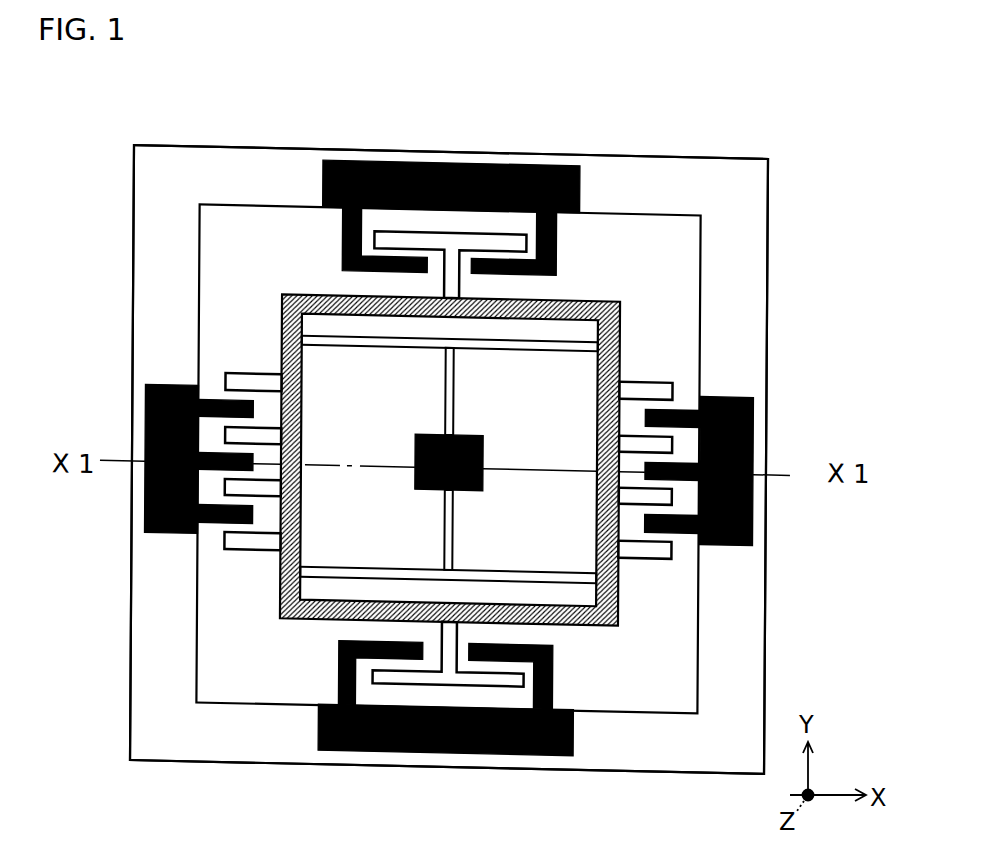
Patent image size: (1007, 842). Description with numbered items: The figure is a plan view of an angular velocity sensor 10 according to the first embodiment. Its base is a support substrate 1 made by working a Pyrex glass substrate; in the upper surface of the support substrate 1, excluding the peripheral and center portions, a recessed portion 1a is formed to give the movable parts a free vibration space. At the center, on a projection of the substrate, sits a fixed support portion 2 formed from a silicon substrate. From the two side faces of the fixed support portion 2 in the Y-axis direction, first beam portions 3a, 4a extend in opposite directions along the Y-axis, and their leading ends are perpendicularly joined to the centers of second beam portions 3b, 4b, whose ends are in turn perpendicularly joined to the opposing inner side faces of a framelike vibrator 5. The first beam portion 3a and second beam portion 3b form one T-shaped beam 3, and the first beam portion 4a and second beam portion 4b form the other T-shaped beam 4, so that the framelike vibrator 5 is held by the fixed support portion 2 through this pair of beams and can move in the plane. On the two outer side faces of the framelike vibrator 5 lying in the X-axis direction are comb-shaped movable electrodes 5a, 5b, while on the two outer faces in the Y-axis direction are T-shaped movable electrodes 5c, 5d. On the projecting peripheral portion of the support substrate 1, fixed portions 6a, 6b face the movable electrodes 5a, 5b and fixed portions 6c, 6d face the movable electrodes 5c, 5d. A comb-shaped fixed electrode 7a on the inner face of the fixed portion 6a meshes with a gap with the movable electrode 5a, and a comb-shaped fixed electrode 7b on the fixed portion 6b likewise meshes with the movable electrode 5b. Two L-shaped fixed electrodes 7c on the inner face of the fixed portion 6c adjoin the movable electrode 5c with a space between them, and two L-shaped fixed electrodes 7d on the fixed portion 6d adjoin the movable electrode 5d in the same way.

The angular velocity sensor 10 is at (782, 128).
The support substrate 1 is at (773, 207).
The recessed portion 1a is at (679, 287).
The fixed support portion 2 is at (486, 424).
The T-shaped beam 3 is at (449, 387).
The first beam portion 3a is at (447, 404).
The second beam portion 3b is at (510, 349).
The T-shaped beam 4 is at (448, 535).
The first beam portion 4a is at (447, 520).
The second beam portion 4b is at (497, 573).
The framelike vibrator 5 is at (606, 297).
The comb-shaped movable electrode 5a is at (643, 541).
The comb-shaped movable electrode 5b is at (254, 382).
The T-shaped movable electrode 5c is at (393, 238).
The T-shaped movable electrode 5d is at (394, 679).
The fixed portion 6a is at (753, 411).
The fixed portion 6b is at (145, 500).
The fixed portion 6c is at (345, 165).
The fixed portion 6d is at (340, 757).
The comb-shaped fixed electrode 7a is at (672, 525).
The comb-shaped fixed electrode 7b is at (226, 405).
The L-shaped fixed electrodes 7c is at (491, 260).
The L-shaped fixed electrodes 7d is at (488, 660).